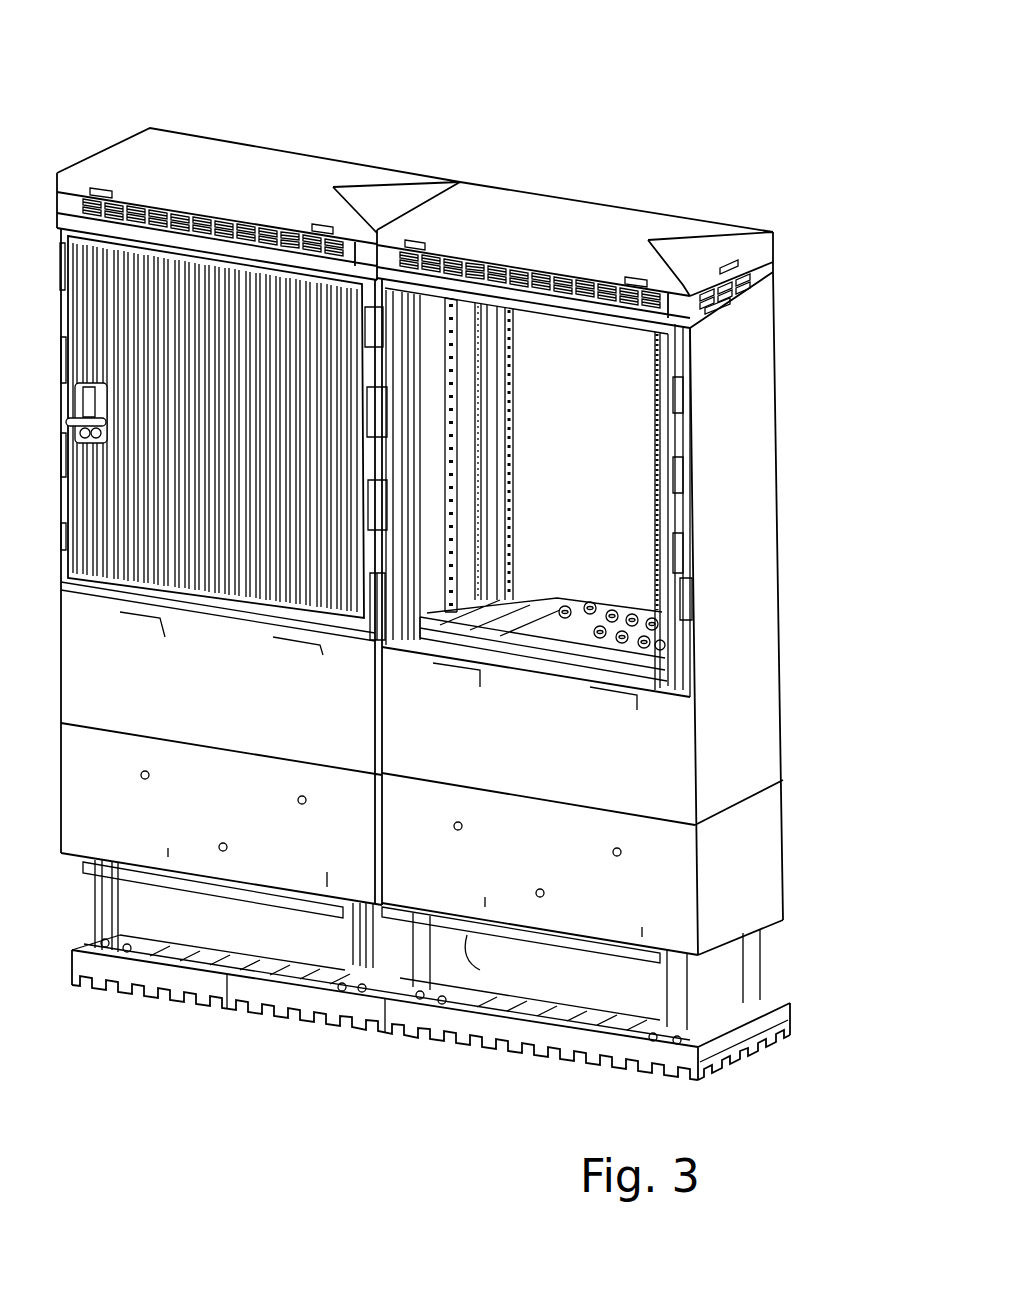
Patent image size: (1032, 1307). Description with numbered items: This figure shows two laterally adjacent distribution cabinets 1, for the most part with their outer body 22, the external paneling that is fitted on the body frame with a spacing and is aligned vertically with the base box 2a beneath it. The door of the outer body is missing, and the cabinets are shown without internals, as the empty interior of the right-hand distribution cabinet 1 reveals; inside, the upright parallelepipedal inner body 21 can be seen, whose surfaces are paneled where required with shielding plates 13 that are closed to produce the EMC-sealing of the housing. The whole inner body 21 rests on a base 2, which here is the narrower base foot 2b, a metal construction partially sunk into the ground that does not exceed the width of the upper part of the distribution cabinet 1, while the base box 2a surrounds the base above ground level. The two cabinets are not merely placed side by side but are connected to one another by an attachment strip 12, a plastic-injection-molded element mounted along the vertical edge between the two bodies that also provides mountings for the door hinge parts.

The distribution cabinet 1 is at (277, 130).
The base 2 is at (482, 937).
The base box 2a is at (521, 901).
The base foot 2b is at (105, 897).
The attachment strip 12 is at (380, 604).
The shielding plate 13 is at (564, 492).
The inner body 21 is at (395, 500).
The outer body 22 is at (223, 438).